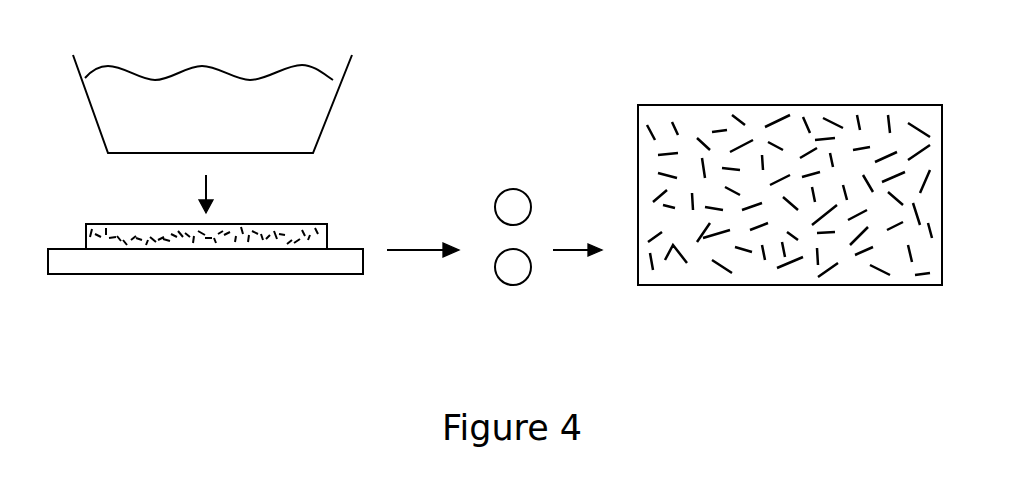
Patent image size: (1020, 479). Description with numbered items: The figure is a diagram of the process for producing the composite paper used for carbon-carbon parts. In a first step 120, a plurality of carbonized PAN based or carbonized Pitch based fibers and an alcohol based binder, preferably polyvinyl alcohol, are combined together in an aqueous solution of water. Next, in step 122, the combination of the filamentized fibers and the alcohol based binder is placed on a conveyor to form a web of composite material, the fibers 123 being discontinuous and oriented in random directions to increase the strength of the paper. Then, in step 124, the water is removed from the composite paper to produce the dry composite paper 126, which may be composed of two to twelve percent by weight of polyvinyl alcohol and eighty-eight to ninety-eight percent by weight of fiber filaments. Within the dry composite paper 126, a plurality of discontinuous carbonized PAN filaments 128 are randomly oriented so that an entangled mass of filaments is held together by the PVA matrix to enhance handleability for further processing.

The first step 120 is at (303, 65).
The step 122 is at (278, 225).
The carbon fibers in mat 123 is at (110, 240).
The step 124 is at (518, 190).
The dry composite paper 126 is at (698, 105).
The discontinuous carbonized PAN filaments 128 is at (818, 145).